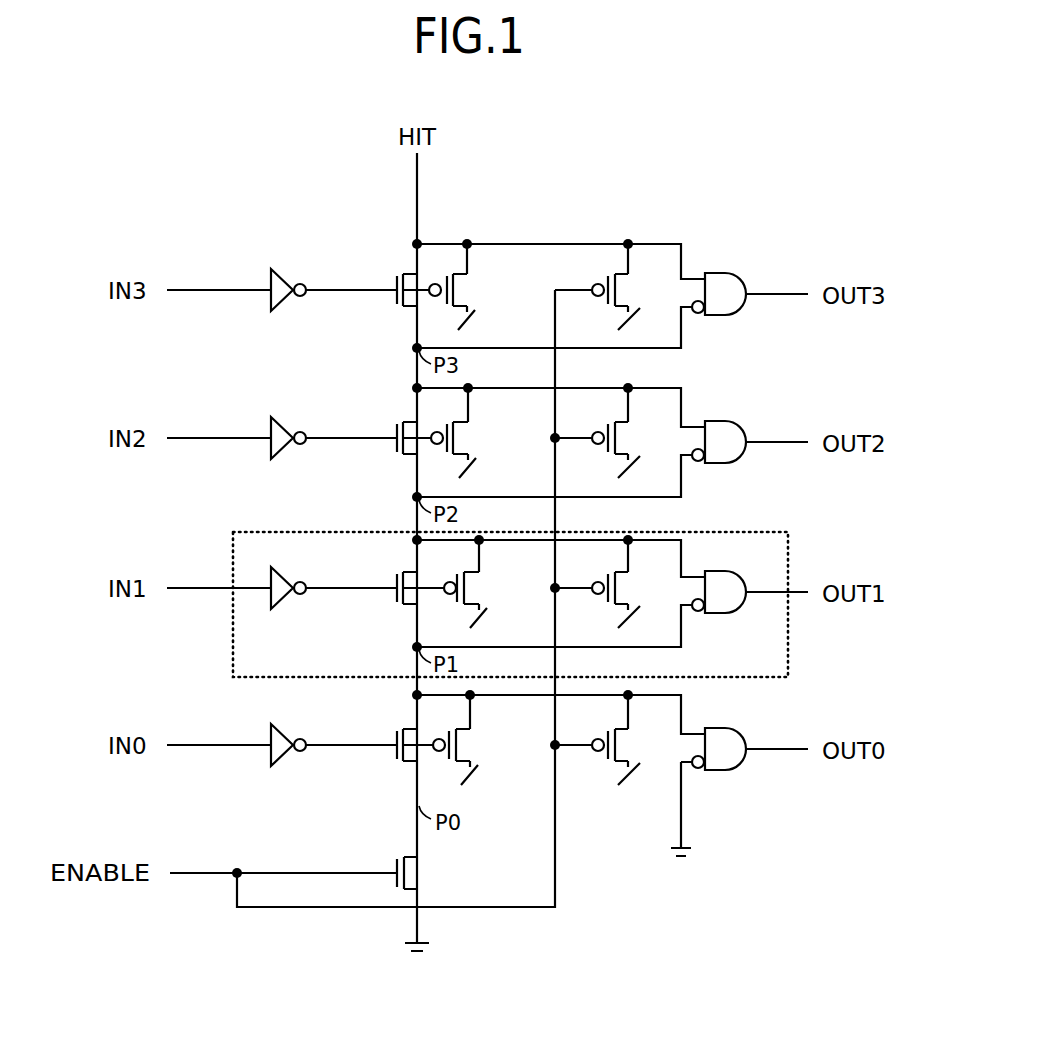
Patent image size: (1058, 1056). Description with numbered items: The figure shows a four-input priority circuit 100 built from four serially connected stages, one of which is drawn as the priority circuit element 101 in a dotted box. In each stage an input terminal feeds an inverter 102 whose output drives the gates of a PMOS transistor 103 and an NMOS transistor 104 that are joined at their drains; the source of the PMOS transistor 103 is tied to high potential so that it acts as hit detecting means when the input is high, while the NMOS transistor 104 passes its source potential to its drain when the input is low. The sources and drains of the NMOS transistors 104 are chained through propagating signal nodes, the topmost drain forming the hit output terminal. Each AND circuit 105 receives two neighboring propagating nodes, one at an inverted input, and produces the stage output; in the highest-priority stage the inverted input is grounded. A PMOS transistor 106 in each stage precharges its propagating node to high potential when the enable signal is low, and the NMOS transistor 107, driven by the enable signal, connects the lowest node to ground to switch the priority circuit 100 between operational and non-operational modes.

The priority circuit 100 is at (812, 113).
The priority circuit element 101 is at (800, 560).
The inverter 102 is at (286, 777).
The PMOS transistor 103 is at (473, 747).
The NMOS transistor 104 is at (402, 775).
The AND circuit 105 is at (722, 786).
The PMOS transistor 106 is at (631, 747).
The NMOS transistor 107 is at (419, 861).